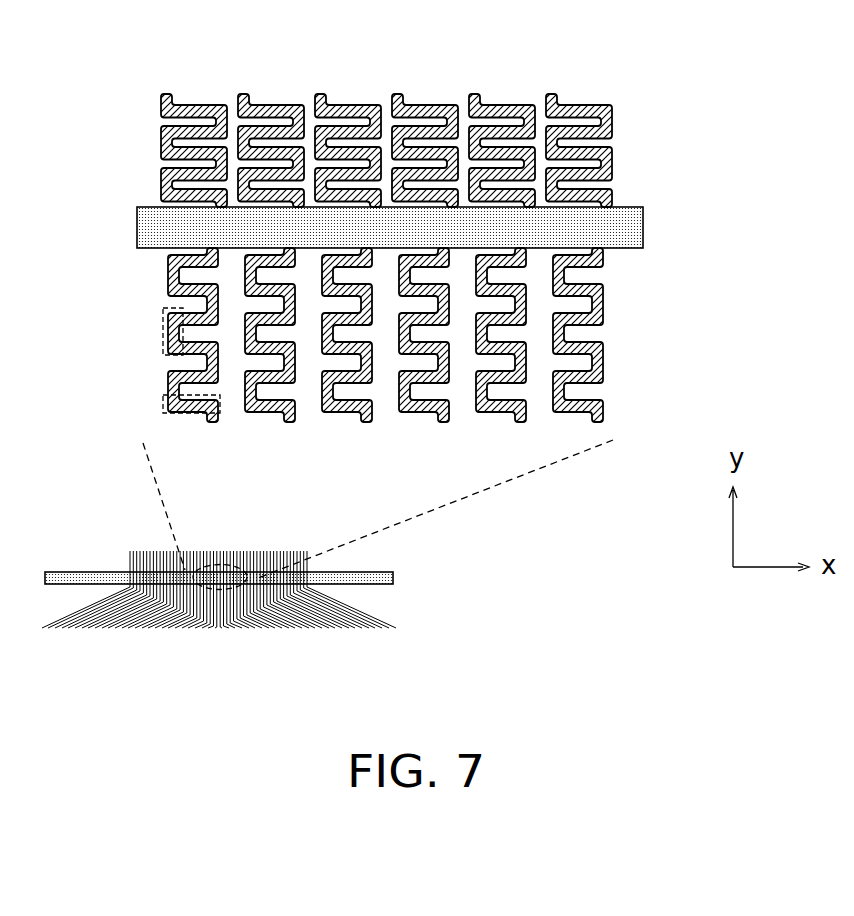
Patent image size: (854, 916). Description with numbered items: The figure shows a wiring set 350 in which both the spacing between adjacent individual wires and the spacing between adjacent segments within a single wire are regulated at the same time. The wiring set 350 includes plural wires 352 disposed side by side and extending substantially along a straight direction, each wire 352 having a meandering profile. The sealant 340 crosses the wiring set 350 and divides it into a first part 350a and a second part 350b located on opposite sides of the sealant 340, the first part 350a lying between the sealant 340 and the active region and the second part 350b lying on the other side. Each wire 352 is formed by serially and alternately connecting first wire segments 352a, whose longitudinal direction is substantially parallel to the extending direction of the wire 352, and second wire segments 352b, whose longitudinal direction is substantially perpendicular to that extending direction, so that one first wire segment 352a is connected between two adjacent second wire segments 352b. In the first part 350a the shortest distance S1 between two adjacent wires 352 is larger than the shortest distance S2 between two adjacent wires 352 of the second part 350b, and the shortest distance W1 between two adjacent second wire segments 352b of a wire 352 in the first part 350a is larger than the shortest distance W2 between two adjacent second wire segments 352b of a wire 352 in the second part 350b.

The sealant 340 is at (600, 228).
The wiring set 350 is at (281, 550).
The first part 350a is at (652, 248).
The second part 350b is at (440, 110).
The wire 352 is at (197, 99).
The first wire segment 352a is at (163, 325).
The second wire segment 352b is at (157, 410).
The shortest distance between two adjacent segments of a wire of the first part W1 is at (168, 371).
The shortest distance between two adjacent segments of a wire of the second part W2 is at (163, 168).
The shortest distance between two adjacent wires of the first part S1 is at (218, 422).
The shortest distance between two adjacent wires of the second part S2 is at (238, 103).